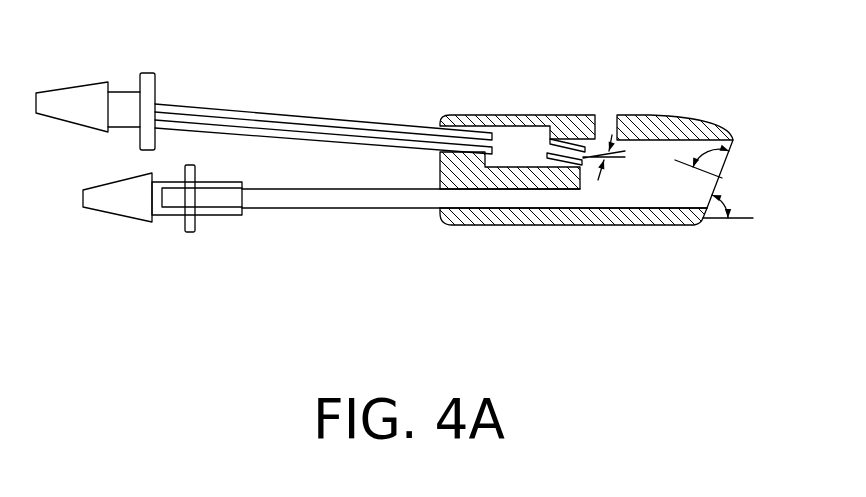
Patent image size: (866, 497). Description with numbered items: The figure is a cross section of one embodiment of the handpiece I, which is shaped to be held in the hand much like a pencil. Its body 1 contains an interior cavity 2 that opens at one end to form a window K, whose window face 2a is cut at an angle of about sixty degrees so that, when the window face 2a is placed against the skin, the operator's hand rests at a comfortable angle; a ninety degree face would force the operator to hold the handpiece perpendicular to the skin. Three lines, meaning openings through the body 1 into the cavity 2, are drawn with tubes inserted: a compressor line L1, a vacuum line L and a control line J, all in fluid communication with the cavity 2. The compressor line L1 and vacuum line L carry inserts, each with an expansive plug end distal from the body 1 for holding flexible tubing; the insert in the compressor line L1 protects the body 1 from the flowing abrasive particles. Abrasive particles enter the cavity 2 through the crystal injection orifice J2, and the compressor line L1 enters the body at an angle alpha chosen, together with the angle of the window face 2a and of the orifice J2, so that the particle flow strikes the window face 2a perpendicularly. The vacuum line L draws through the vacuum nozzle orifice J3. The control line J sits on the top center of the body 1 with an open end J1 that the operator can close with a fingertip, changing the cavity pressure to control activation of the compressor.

The compressor line L1 is at (320, 103).
The vacuum line L is at (248, 198).
The handpiece I is at (621, 194).
The control line J is at (596, 95).
The open end of control line J1 is at (605, 117).
The crystal injection orifice J2 is at (563, 153).
The vacuum nozzle orifice J3 is at (603, 193).
The body 1 is at (537, 228).
The interior cavity 2 is at (657, 190).
The window K is at (762, 176).
The window face 2a is at (723, 171).